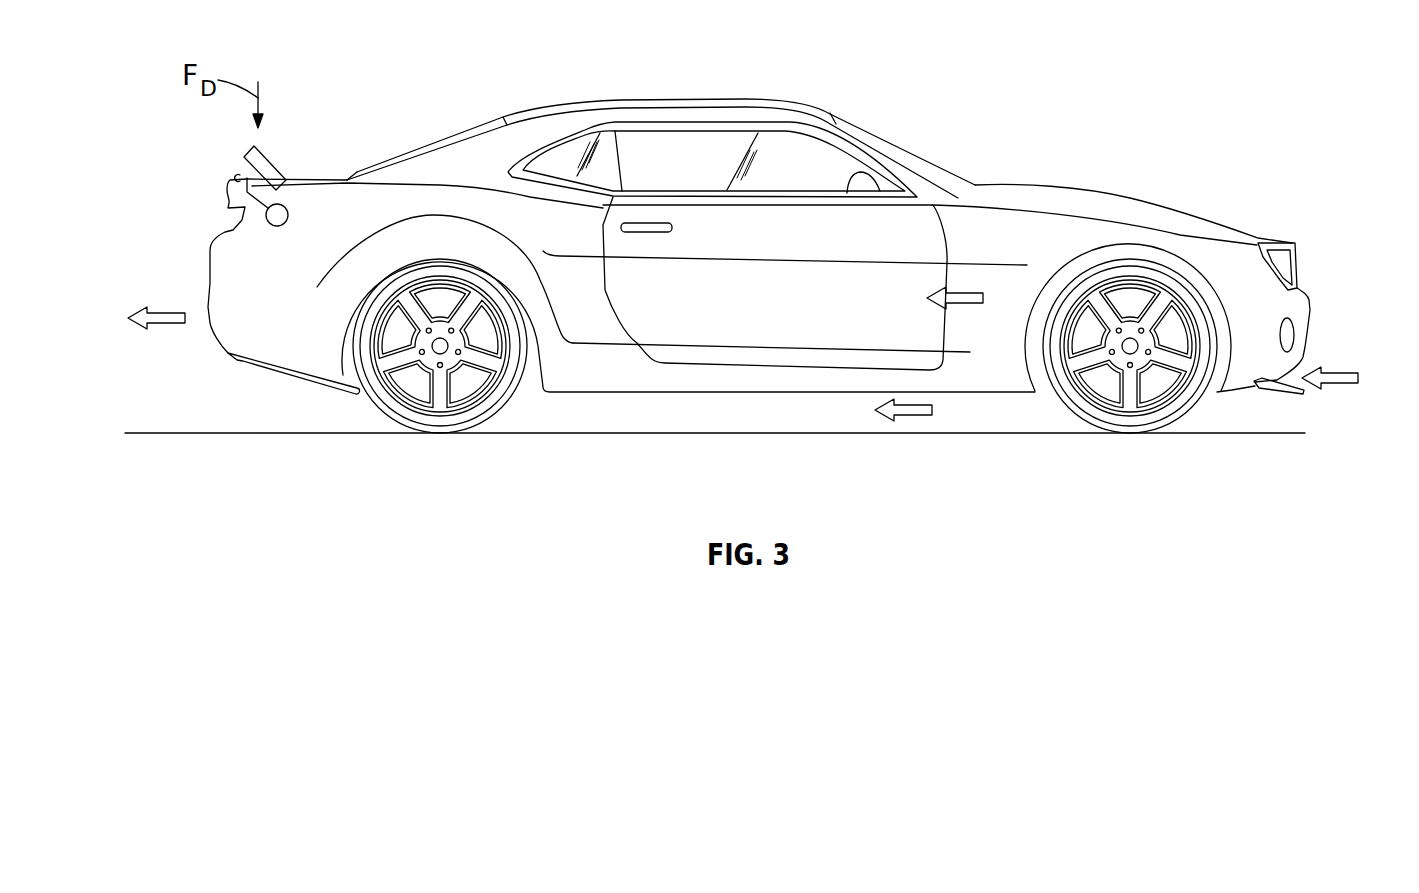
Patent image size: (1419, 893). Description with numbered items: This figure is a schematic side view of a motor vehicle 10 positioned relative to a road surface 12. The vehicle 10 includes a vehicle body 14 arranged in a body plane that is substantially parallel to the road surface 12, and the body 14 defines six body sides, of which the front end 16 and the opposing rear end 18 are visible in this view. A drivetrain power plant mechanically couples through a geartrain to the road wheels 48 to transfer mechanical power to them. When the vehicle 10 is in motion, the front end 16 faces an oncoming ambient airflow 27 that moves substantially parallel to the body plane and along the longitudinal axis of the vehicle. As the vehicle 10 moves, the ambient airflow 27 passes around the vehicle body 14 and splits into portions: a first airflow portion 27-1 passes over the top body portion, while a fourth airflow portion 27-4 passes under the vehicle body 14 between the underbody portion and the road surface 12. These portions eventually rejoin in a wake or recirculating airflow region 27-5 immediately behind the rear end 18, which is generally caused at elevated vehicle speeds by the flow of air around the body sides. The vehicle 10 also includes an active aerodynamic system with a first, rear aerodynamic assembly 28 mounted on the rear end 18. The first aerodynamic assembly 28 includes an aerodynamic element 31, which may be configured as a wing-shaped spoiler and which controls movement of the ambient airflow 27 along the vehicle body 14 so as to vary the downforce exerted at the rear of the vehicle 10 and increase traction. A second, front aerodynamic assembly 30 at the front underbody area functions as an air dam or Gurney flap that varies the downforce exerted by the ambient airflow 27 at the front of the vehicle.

The motor vehicle 10 is at (938, 132).
The road surface 12 is at (1240, 433).
The vehicle body 14 is at (796, 304).
The front end 16 is at (1313, 302).
The rear end 18 is at (208, 305).
The ambient airflow 27 is at (1340, 371).
The first airflow portion 27-1 is at (915, 420).
The fourth airflow portion 27-4 is at (963, 289).
The recirculating airflow region 27-5 is at (163, 313).
The first aerodynamic assembly 28 is at (266, 143).
The second aerodynamic assembly 30 is at (1280, 391).
The aerodynamic element 31 is at (272, 160).
The road wheels 48 is at (440, 421).